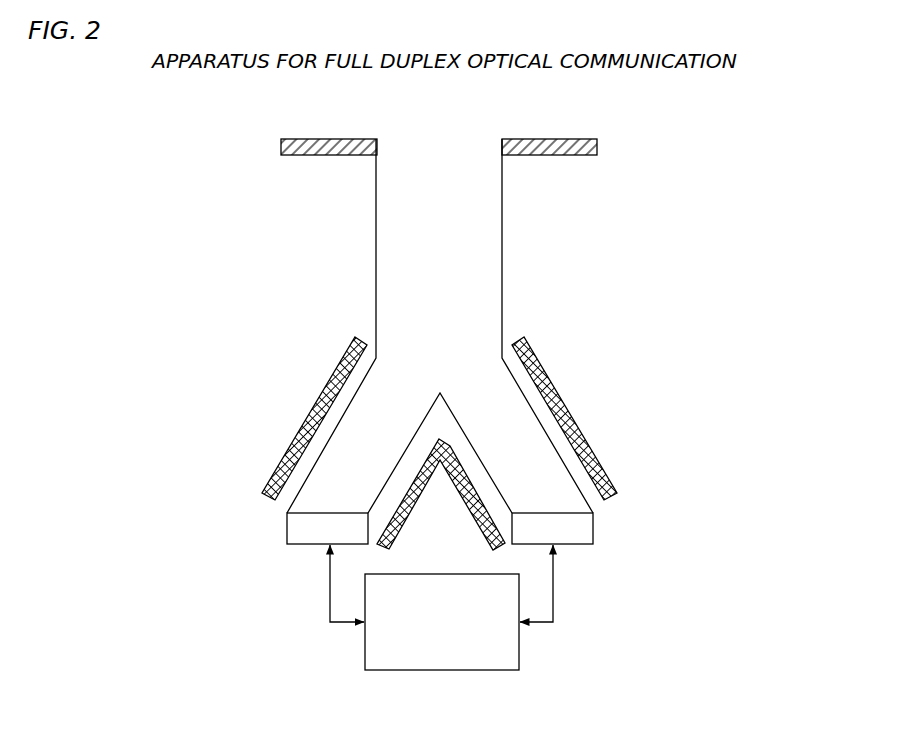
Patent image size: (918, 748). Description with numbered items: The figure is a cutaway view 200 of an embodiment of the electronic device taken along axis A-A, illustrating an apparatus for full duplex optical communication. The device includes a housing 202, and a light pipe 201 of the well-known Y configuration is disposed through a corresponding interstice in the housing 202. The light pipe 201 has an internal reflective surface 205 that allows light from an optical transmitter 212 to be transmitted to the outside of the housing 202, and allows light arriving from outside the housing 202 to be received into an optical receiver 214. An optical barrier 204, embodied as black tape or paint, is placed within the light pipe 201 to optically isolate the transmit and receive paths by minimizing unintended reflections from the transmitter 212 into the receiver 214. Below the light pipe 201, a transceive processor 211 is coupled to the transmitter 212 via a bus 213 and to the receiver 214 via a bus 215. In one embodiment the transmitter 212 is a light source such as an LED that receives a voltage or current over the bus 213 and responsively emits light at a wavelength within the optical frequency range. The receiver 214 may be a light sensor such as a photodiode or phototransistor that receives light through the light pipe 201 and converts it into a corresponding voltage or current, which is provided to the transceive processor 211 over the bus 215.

The cutaway view 200 is at (768, 101).
The light pipe 201 is at (502, 245).
The housing 202 is at (570, 139).
The optical barrier 204 is at (572, 418).
The internal reflective surface 205 is at (423, 248).
The transceive processor 211 is at (442, 622).
The optical transmitter 212 is at (287, 524).
The bus 213 is at (330, 578).
The optical receiver 214 is at (593, 525).
The bus 215 is at (553, 580).